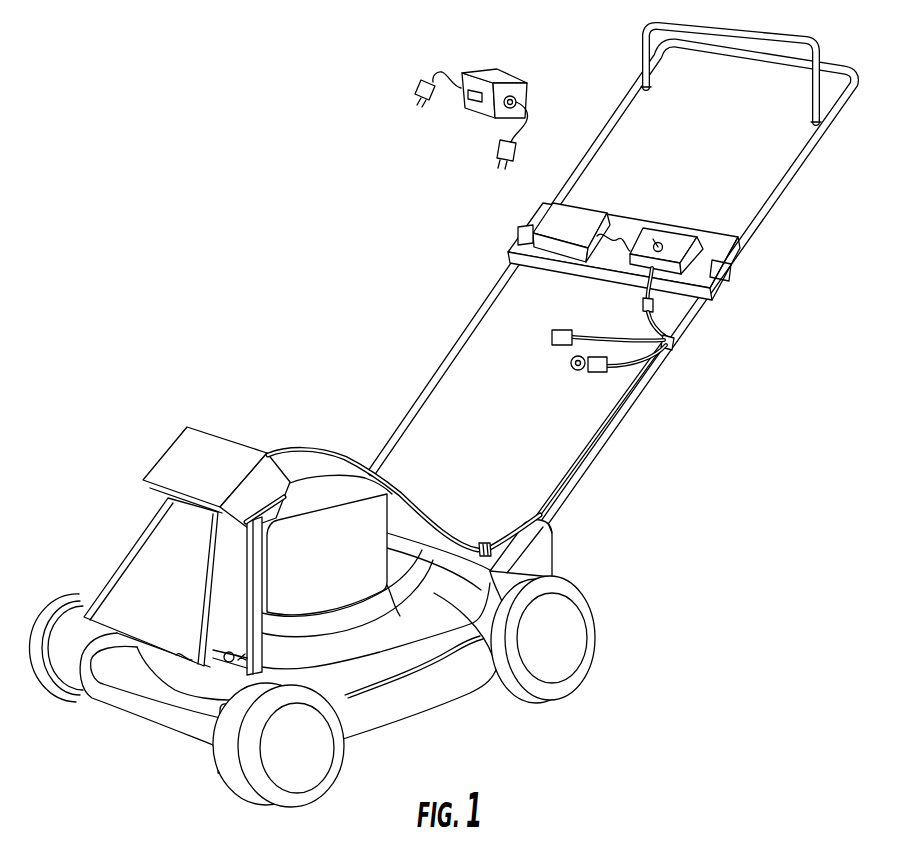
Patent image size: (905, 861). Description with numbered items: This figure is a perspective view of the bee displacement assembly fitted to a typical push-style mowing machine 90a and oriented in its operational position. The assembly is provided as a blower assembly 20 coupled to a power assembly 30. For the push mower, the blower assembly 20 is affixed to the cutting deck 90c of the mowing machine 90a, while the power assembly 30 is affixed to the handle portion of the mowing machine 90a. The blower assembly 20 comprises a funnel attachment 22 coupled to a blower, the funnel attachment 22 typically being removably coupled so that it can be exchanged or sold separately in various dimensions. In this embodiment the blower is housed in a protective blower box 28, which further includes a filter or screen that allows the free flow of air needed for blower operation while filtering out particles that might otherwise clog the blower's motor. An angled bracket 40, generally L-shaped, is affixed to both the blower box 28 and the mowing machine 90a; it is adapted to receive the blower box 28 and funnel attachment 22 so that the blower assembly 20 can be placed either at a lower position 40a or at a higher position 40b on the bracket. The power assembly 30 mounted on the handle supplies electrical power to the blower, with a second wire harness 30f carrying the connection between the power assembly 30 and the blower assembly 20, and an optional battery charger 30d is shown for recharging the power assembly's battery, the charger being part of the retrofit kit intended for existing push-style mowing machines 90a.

The blower assembly 20 is at (441, 416).
The funnel attachment 22 is at (143, 572).
The blower box 28 is at (192, 452).
The power assembly 30 is at (613, 274).
The battery charger 30d is at (500, 82).
The second wire harness 30f is at (553, 552).
The angled bracket 40 is at (254, 571).
The lower position of angled bracket 40a is at (250, 657).
The upper position of angled bracket 40b is at (272, 501).
The push-style mowing machine 90a is at (574, 519).
The deck of mowing machine 90c is at (422, 700).